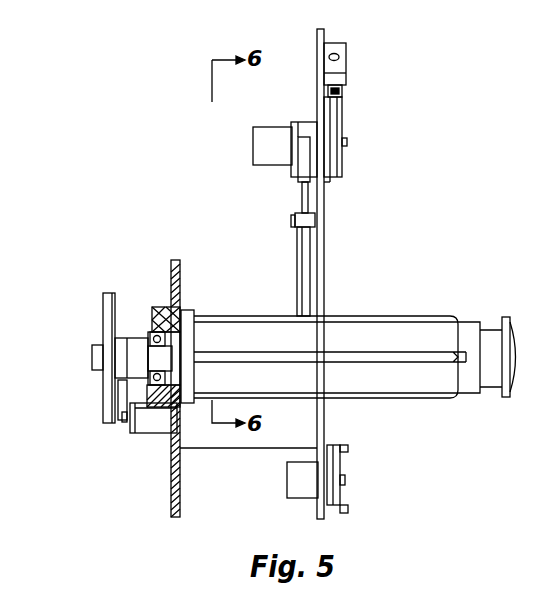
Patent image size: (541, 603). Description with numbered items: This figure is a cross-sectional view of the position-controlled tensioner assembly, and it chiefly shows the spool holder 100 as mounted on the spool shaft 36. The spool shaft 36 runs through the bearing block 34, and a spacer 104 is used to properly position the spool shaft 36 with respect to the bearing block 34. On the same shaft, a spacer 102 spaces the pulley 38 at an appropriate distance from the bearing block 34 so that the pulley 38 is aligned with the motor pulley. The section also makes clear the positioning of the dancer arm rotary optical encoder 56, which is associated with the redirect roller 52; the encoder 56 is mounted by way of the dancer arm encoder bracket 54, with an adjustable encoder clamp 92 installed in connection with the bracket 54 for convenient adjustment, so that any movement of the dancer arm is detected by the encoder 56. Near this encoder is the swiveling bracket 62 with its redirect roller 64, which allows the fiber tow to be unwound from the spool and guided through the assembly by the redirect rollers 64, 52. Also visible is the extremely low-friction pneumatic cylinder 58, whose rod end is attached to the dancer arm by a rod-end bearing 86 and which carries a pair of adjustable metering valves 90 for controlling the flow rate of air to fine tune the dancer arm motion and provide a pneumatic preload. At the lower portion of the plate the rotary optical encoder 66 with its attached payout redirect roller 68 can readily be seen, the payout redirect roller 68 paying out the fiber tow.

The bearing block 34 is at (145, 403).
The spool shaft 36 is at (92, 357).
The pulley 38 is at (105, 402).
The redirect roller 52 is at (343, 163).
The dancer arm encoder bracket 54 is at (217, 149).
The rotary optical encoder 56 is at (217, 149).
The adjustable encoder clamp 92 is at (276, 140).
The pneumatic cylinder 58 is at (300, 280).
The swiveling bracket 62 is at (346, 58).
The redirect roller 64 is at (342, 117).
The rotary optical encoder 66 is at (295, 482).
The payout redirect roller 68 is at (343, 495).
The rod-end bearing 86 is at (300, 177).
The adjustable metering valves 90 is at (292, 232).
The spool holder 100 is at (404, 316).
The spacer 102 is at (130, 338).
The spacer 104 is at (157, 307).